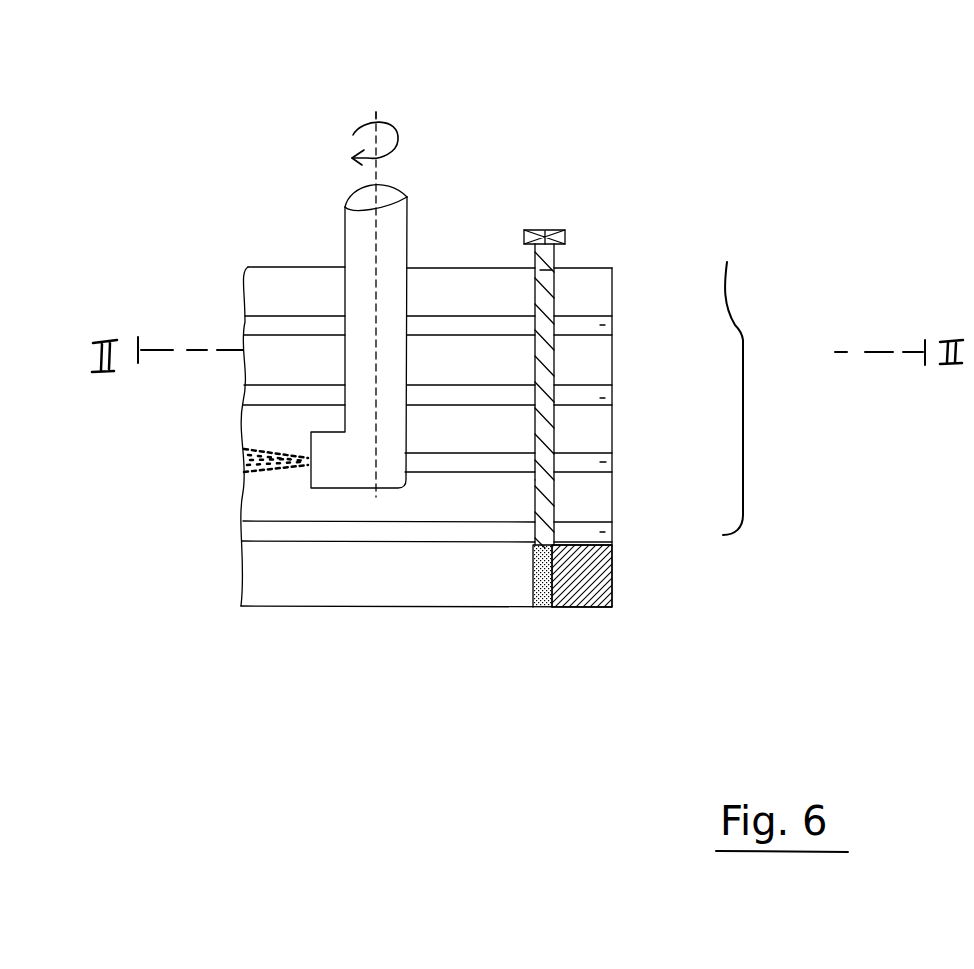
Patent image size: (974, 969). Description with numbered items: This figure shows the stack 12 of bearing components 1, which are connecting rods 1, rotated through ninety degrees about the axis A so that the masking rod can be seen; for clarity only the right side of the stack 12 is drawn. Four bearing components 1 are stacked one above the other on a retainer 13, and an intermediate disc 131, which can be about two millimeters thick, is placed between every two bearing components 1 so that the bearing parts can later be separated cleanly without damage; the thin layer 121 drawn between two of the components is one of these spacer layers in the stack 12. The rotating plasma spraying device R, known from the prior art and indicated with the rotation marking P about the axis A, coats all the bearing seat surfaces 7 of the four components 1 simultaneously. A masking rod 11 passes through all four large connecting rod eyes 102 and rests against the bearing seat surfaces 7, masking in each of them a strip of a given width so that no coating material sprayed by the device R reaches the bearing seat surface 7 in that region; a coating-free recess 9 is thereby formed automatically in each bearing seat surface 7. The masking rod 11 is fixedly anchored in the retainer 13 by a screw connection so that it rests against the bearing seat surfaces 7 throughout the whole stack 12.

The bearing component 1 is at (605, 292).
The bearing seat surface 7 is at (508, 487).
The recess 9 is at (550, 300).
The pin 11 is at (563, 230).
The stack 12 is at (530, 434).
The retainer 13 is at (610, 590).
The large connecting rod eye 102 is at (466, 302).
The intermediate layer 121 is at (608, 462).
The intermediate disc 131 is at (598, 330).
The axis A is at (382, 168).
The axis P is at (377, 120).
The rotating plasma spraying device R is at (400, 240).